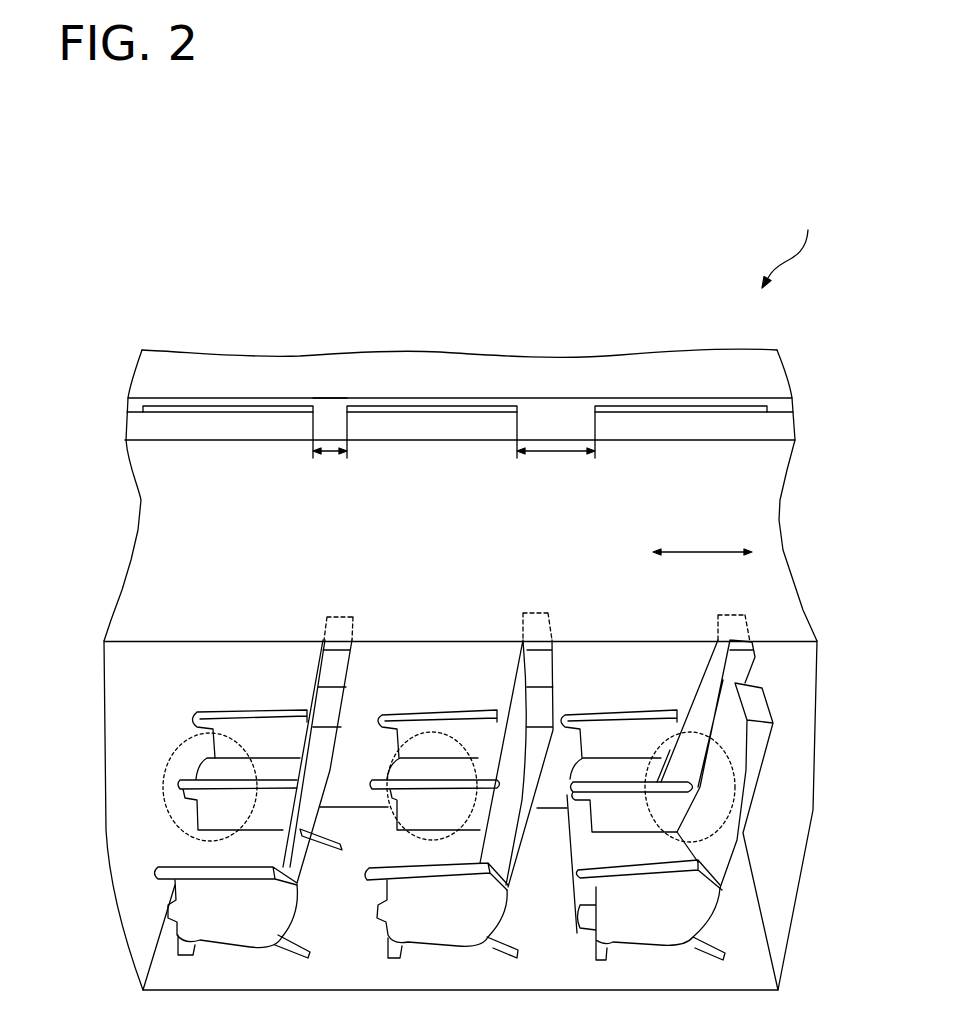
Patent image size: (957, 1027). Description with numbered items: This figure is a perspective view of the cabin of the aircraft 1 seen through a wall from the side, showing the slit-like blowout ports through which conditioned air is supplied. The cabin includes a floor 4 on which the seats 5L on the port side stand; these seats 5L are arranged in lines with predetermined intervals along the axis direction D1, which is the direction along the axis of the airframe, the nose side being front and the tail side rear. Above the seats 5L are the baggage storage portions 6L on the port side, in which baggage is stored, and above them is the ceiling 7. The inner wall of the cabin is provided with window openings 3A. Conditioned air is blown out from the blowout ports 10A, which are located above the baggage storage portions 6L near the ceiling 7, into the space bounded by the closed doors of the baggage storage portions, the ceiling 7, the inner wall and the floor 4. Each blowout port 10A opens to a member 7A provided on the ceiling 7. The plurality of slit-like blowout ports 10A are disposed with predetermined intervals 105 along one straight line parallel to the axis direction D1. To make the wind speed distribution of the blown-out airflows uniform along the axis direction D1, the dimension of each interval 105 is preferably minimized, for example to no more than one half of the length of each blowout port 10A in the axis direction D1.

The aircraft 1 is at (788, 247).
The window openings 3A is at (180, 790).
The floor 4 is at (324, 897).
The seats on the port side 5L is at (233, 717).
The baggage storage portions on the port side 6L is at (472, 524).
The ceiling 7 is at (393, 387).
The member provided on the ceiling 7A is at (563, 404).
The blowout ports 10A is at (263, 398).
The intervals 105 is at (454, 467).
The axis direction D1 is at (702, 541).